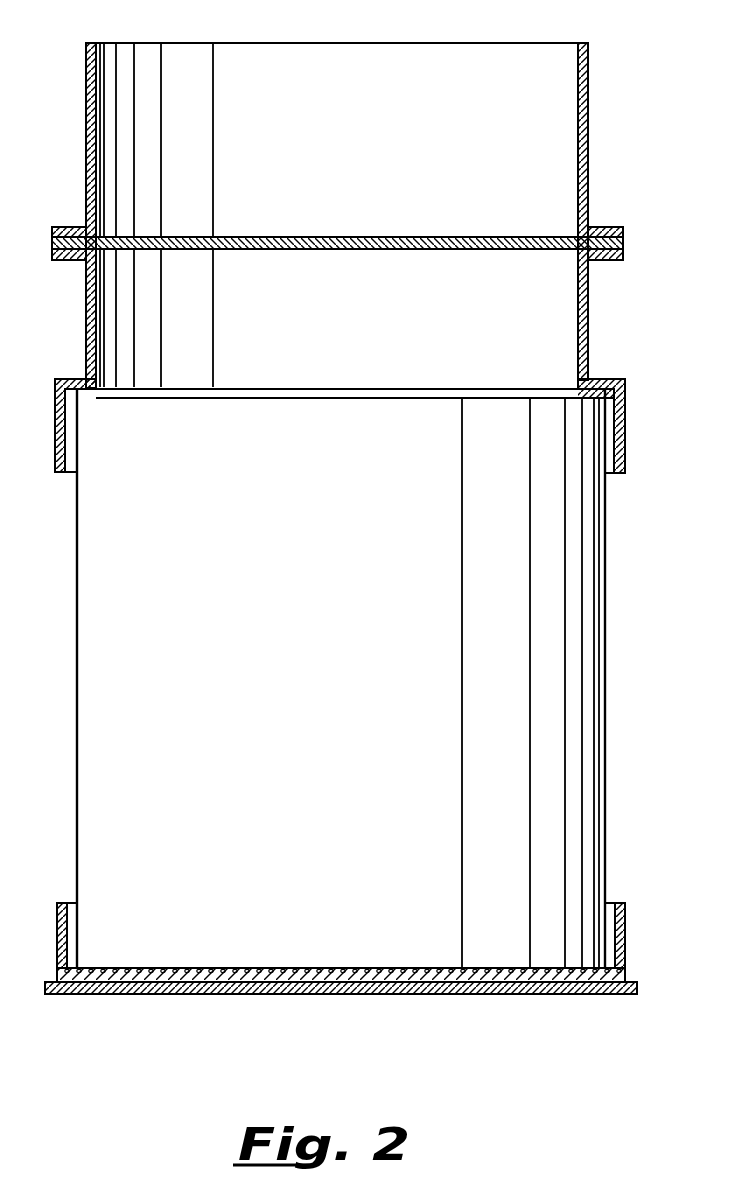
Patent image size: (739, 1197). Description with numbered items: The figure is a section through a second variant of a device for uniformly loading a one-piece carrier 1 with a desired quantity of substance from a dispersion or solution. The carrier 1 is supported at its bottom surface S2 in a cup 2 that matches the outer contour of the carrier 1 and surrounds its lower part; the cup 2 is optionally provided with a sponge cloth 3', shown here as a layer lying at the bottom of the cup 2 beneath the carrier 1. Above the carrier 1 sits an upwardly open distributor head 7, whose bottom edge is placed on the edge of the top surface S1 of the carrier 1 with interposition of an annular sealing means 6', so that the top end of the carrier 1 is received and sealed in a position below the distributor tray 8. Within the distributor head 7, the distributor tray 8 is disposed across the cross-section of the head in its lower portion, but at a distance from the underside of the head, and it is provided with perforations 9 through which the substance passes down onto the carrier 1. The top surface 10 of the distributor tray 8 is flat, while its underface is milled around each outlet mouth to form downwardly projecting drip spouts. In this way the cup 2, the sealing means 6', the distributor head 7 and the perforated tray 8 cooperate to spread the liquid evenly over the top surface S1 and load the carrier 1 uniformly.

The carrier 1 is at (590, 672).
The cup 2 is at (623, 931).
The sponge cloth 3' is at (341, 943).
The annular sealing means 6' is at (340, 426).
The distributor head 7 is at (590, 160).
The distributor tray 8 is at (420, 236).
The perforations 9 is at (311, 236).
The top surface of the distributor tray 10 is at (348, 236).
The top surface of the carrier S1 is at (278, 398).
The bottom surface of the carrier S2 is at (422, 976).